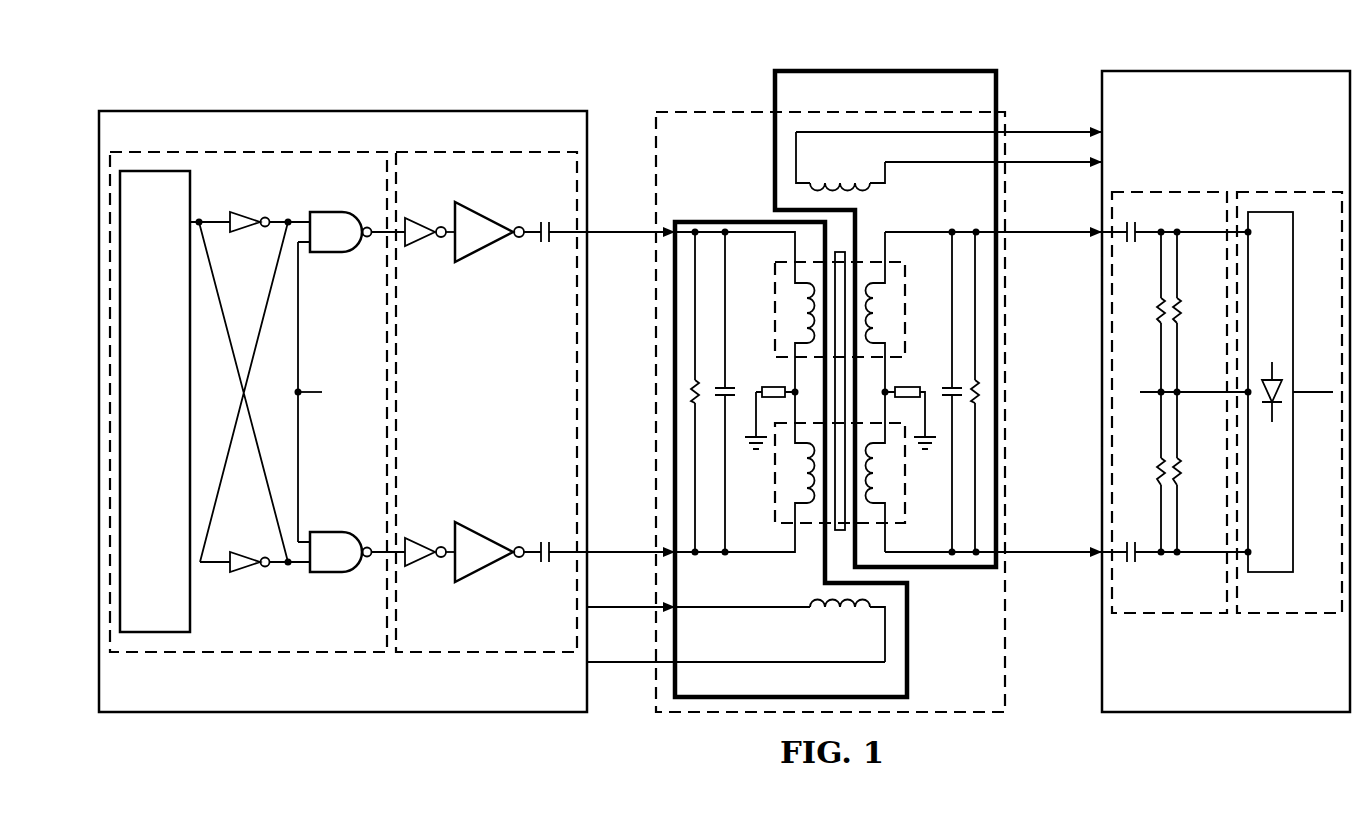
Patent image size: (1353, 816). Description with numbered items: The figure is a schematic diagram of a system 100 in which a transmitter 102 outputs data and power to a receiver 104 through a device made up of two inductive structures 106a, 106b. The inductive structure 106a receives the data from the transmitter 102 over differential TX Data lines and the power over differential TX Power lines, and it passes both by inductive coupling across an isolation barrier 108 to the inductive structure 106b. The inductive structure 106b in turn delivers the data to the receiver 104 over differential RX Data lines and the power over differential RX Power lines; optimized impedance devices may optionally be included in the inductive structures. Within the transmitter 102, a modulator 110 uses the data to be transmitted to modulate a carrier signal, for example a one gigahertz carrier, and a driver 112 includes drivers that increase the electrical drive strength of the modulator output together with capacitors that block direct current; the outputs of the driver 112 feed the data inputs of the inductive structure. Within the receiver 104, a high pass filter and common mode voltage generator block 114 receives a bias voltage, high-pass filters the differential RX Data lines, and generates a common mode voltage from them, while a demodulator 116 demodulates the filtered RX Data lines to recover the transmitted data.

The system 100 is at (567, 64).
The transmitter 102 is at (282, 109).
The receiver 104 is at (1251, 68).
The inductive structure 106a is at (911, 663).
The inductive structure 106b is at (945, 67).
The isolation barrier 108 is at (839, 250).
The modulator 110 is at (239, 654).
The driver 112 is at (472, 654).
The high pass filter and common mode voltage generator block 114 is at (1171, 616).
The demodulator 116 is at (1293, 616).